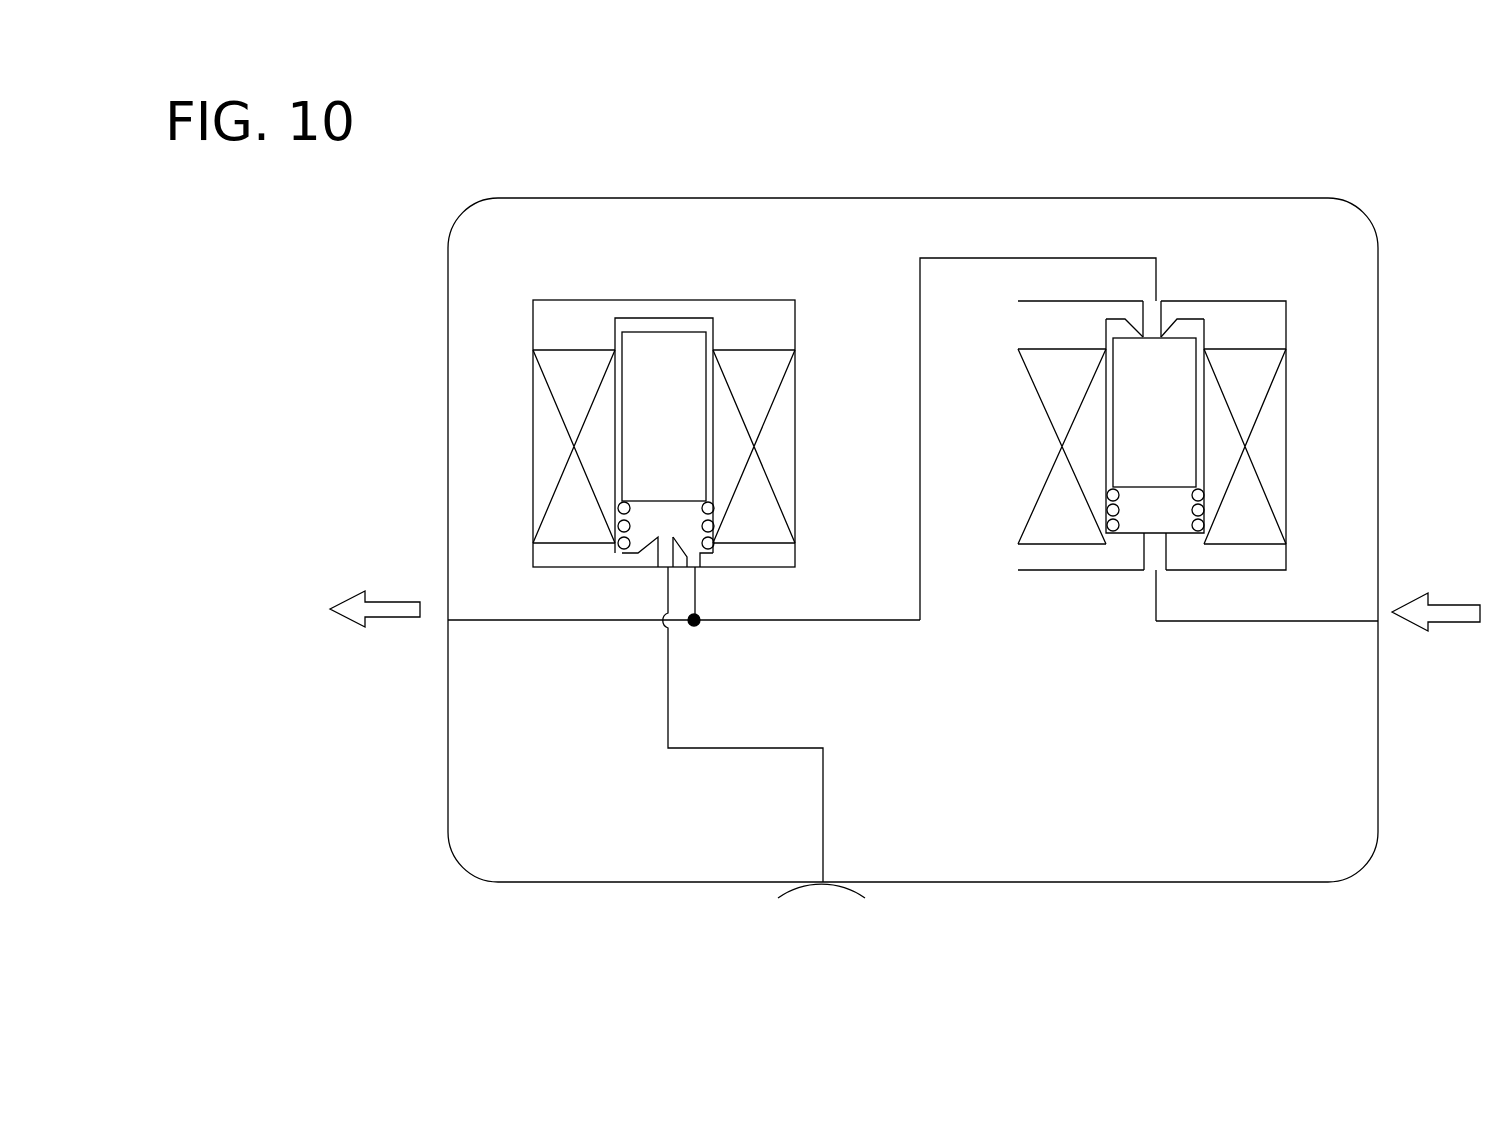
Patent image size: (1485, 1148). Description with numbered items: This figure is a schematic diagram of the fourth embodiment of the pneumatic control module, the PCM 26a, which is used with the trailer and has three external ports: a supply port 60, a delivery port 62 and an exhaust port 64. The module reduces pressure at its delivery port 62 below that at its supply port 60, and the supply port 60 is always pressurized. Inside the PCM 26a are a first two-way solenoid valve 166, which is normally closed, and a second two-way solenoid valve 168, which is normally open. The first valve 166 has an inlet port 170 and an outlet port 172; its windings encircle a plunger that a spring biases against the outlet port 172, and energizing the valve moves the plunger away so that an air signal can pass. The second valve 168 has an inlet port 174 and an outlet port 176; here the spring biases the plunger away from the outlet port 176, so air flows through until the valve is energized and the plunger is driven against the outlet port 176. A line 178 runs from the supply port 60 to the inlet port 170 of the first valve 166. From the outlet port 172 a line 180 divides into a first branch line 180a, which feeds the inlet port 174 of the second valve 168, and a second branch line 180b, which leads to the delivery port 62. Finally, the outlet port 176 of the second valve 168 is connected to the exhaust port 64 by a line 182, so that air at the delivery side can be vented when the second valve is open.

The pneumatic control module 26a is at (886, 195).
The second 2-way solenoid valve 168 is at (580, 300).
The first 2-way solenoid valve 166 is at (1267, 300).
The line 180 is at (1020, 258).
The outlet port 172 is at (1162, 300).
The inlet port 170 is at (1160, 571).
The line 178 is at (1265, 623).
The supply port 60 is at (1376, 625).
The delivery port 62 is at (448, 620).
The second branch line 180b is at (520, 620).
The first branch line 180a is at (695, 598).
The line 182 is at (668, 680).
The exhaust port 64 is at (823, 882).
The outlet port 176 is at (663, 570).
The inlet port 174 is at (697, 570).